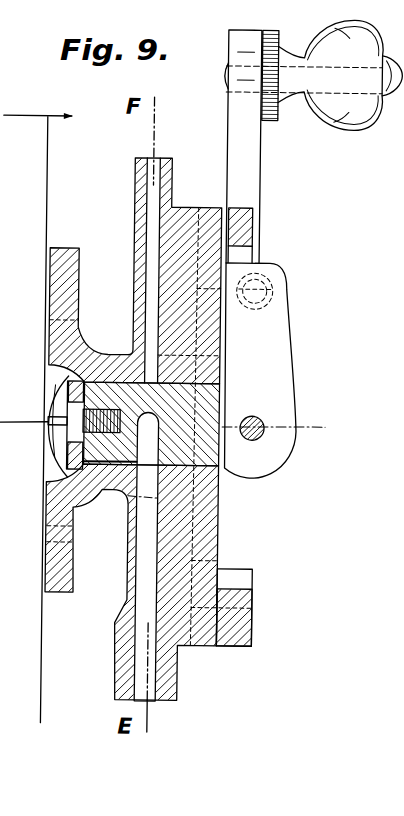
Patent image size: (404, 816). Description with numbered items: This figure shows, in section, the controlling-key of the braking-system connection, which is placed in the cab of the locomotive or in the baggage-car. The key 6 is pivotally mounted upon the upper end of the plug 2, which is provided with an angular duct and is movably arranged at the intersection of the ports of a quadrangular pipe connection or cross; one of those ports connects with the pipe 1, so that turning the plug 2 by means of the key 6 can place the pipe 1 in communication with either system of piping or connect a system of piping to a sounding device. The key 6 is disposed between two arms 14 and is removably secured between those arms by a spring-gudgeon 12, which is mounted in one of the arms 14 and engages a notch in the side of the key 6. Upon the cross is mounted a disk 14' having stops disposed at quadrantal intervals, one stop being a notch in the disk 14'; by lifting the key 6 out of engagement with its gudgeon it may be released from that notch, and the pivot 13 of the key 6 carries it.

The pipe 1 is at (150, 429).
The plug 2 is at (152, 424).
The key 6 is at (244, 177).
The spring-gudgeon 12 is at (268, 288).
The pivot pin 13 is at (278, 414).
The arms 14 is at (276, 371).
The disk 14' is at (219, 638).